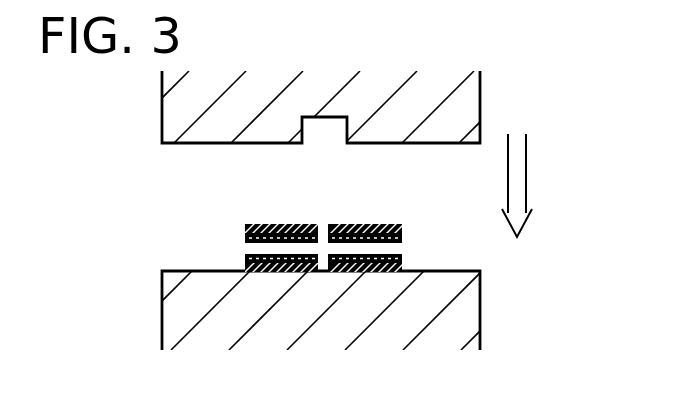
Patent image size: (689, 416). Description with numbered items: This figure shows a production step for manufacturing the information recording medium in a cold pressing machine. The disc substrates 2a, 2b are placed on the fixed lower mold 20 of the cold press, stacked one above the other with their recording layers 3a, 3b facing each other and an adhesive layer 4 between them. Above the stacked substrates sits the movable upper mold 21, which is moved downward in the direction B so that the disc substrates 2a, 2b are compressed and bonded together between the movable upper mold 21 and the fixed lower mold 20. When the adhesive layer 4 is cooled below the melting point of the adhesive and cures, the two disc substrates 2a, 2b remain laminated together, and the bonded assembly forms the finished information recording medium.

The movable upper mold 21 is at (460, 98).
The fixed lower mold 20 is at (455, 322).
The disc substrate 2a is at (245, 233).
The disc substrate 2b is at (247, 268).
The recording layer 3a is at (287, 224).
The recording layer 3b is at (288, 273).
The adhesive layer 4 is at (403, 232).
The direction B is at (517, 202).